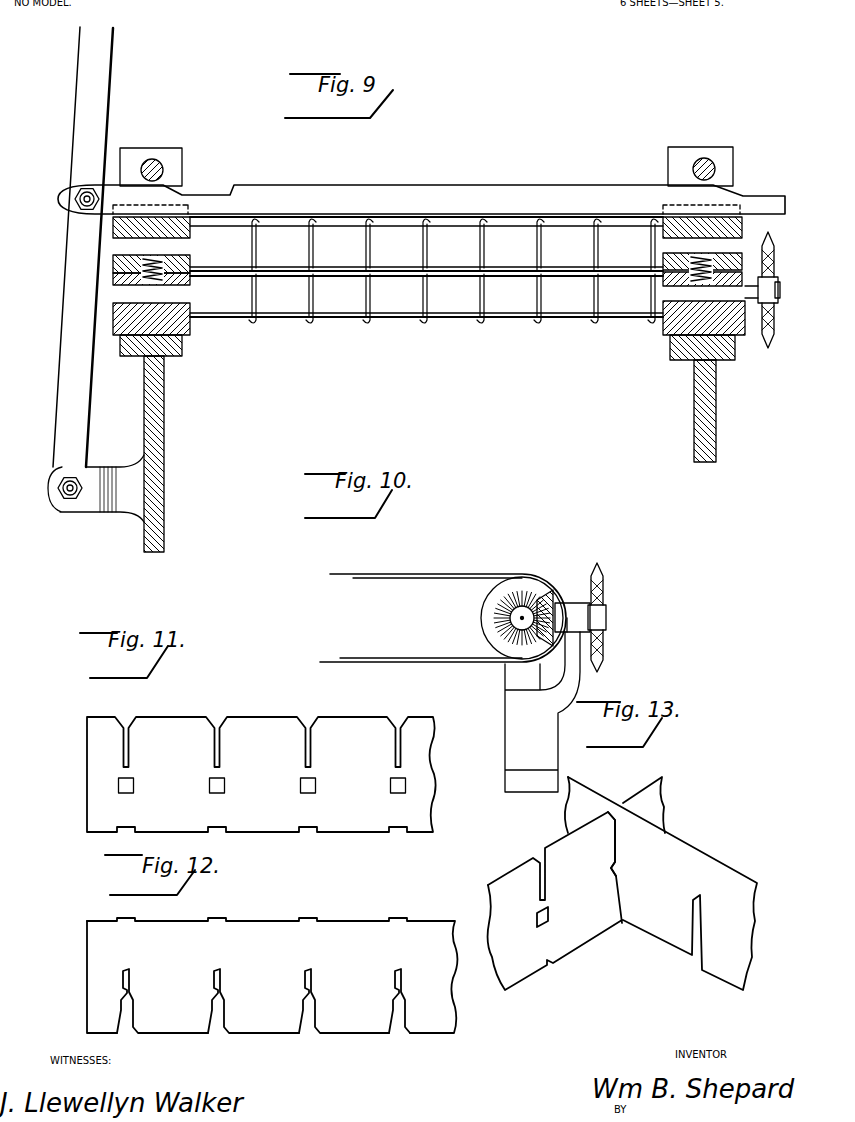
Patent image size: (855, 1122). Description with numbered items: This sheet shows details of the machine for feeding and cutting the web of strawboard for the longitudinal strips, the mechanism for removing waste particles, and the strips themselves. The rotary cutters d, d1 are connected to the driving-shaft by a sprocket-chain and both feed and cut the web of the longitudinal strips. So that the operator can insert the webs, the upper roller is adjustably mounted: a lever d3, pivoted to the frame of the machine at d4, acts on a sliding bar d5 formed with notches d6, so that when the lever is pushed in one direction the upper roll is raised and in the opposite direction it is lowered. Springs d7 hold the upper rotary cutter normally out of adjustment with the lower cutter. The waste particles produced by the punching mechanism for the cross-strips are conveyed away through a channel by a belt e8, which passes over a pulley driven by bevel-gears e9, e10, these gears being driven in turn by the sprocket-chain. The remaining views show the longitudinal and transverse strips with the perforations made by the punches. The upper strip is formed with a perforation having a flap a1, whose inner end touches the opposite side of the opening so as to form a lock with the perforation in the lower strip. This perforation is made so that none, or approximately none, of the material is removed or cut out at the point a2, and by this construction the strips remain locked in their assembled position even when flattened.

In FIG. 9, the rotary cutter d is at (508, 240).
In FIG. 9, the rotary cutter d1 is at (565, 302).
In FIG. 9, the lever d3 is at (95, 103).
In FIG. 9, the pivot d4 is at (66, 497).
In FIG. 9, the sliding bar d5 is at (295, 196).
In FIG. 9, the notches d6 is at (209, 186).
In FIG. 9, the springs d7 is at (707, 272).
In FIG. 10, the belt e8 is at (410, 574).
In FIG. 10, the bevel-gear e9 is at (488, 616).
In FIG. 10, the bevel-gear e10 is at (553, 586).
In FIG. 12, the flap a1 is at (130, 992).
In FIG. 13, the flap a1 is at (618, 880).
In FIG. 12, the point a2 is at (308, 985).